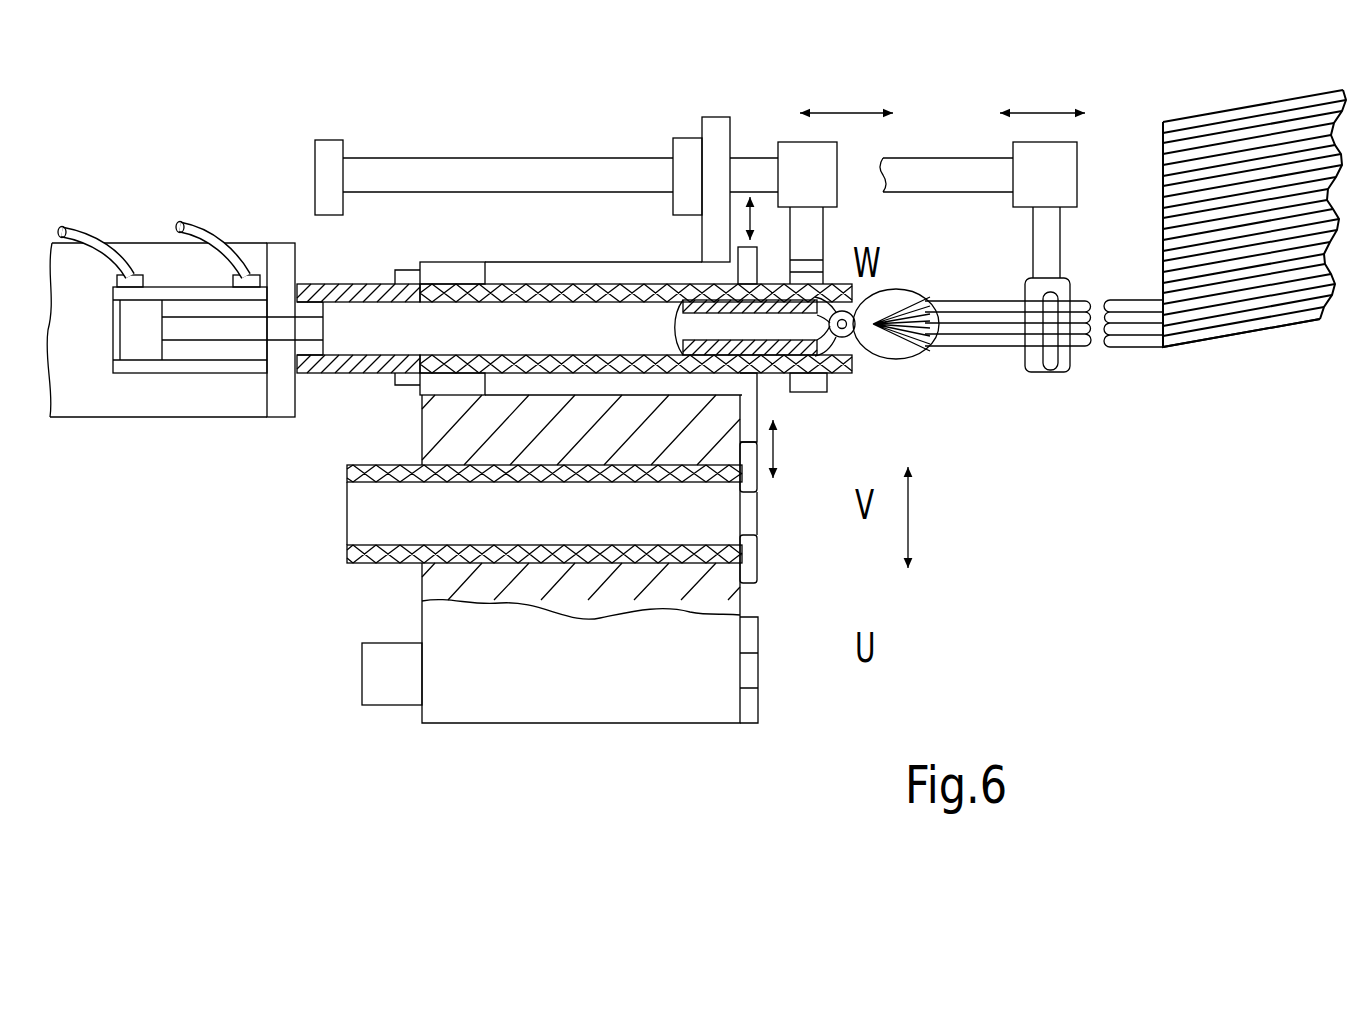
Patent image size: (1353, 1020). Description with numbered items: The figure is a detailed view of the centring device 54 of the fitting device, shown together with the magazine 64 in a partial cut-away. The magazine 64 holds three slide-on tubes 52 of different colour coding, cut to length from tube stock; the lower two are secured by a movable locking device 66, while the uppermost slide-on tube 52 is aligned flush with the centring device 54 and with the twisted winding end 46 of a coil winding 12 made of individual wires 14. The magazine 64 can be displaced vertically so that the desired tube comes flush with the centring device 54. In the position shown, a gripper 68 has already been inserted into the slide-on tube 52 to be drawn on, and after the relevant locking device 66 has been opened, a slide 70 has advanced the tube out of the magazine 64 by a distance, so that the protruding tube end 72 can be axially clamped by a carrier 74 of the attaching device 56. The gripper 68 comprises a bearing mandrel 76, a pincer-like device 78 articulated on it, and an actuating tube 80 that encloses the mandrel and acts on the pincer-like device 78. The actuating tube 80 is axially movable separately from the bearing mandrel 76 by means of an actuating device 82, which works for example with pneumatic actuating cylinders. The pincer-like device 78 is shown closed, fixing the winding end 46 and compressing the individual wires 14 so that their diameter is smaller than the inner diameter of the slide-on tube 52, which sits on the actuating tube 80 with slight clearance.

The coil winding 12 is at (1257, 333).
The individual wires 14 is at (1153, 302).
The winding end 46 is at (912, 327).
The slide-on tube 52 is at (485, 373).
The centring device 54 is at (366, 379).
The attaching device 56 is at (697, 133).
The magazine 64 is at (675, 723).
The locking device 66 is at (757, 483).
The gripper 68 is at (377, 337).
The slide 70 is at (378, 284).
The tube end 72 is at (847, 374).
The carrier 74 is at (822, 280).
The bearing mandrel 76 is at (702, 322).
The pincer-like device 78 is at (903, 293).
The actuating tube 80 is at (776, 349).
The actuating device 82 is at (150, 372).